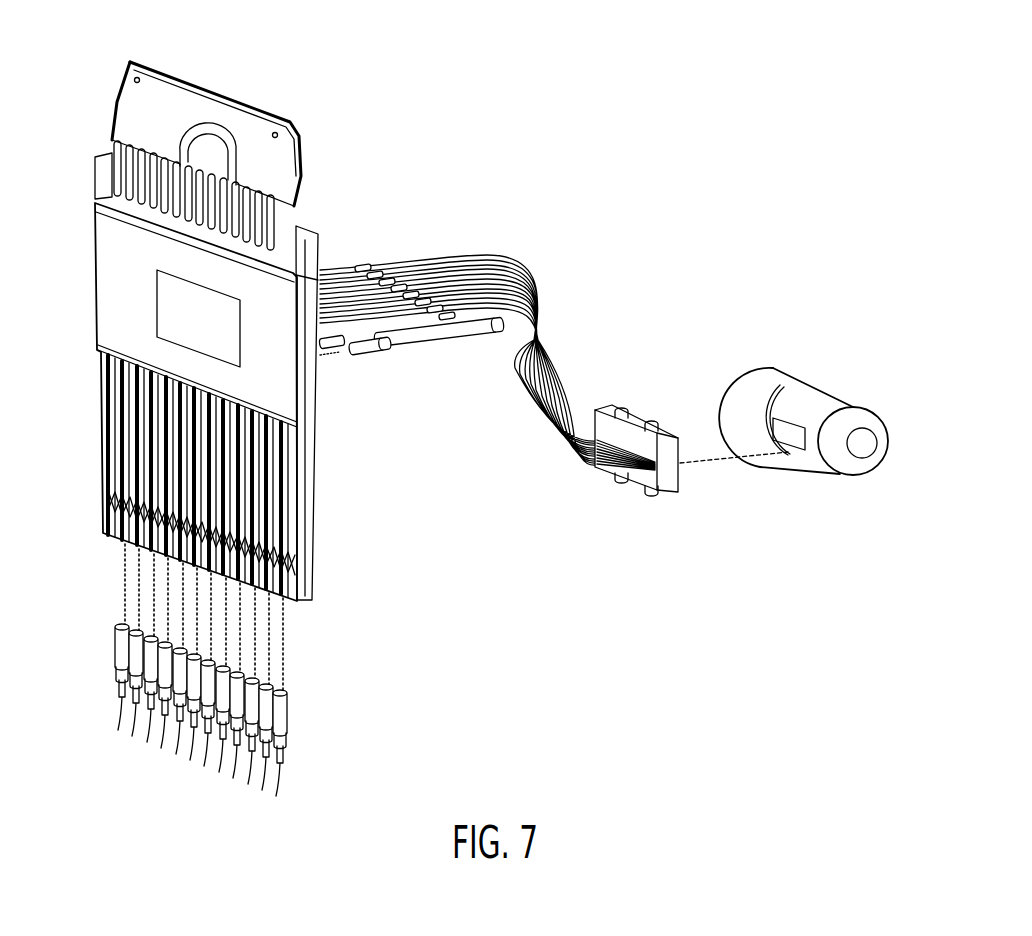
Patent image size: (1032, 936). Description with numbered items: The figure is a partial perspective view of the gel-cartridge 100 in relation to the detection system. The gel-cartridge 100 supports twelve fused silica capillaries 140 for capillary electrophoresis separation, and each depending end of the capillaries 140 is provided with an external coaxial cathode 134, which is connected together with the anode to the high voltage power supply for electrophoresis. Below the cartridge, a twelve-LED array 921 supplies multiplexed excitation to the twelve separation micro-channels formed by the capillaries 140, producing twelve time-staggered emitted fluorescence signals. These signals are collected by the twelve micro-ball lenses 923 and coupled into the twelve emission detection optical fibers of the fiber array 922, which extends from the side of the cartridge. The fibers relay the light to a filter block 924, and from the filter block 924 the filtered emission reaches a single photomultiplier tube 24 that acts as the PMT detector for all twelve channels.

The gel-cartridge 100 is at (273, 163).
The 12-fiber array 922 is at (440, 330).
The micro-ball lenses 923 is at (350, 355).
The photomultiplier tube 24 is at (777, 377).
The filter block 924 is at (638, 473).
The 12-LED array 921 is at (280, 717).
The external coaxial cathode 134 is at (287, 643).
The capillaries 140 is at (125, 601).